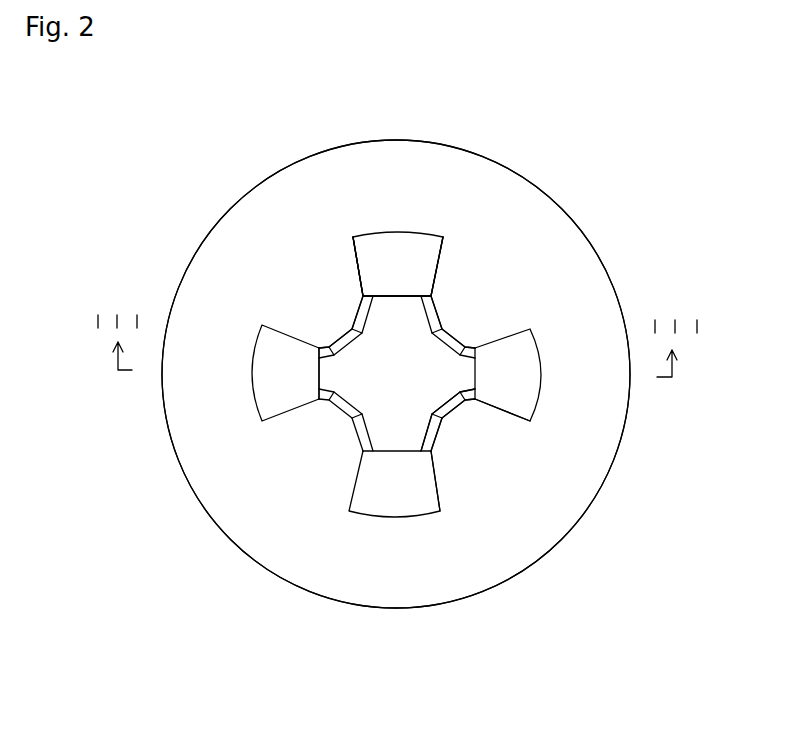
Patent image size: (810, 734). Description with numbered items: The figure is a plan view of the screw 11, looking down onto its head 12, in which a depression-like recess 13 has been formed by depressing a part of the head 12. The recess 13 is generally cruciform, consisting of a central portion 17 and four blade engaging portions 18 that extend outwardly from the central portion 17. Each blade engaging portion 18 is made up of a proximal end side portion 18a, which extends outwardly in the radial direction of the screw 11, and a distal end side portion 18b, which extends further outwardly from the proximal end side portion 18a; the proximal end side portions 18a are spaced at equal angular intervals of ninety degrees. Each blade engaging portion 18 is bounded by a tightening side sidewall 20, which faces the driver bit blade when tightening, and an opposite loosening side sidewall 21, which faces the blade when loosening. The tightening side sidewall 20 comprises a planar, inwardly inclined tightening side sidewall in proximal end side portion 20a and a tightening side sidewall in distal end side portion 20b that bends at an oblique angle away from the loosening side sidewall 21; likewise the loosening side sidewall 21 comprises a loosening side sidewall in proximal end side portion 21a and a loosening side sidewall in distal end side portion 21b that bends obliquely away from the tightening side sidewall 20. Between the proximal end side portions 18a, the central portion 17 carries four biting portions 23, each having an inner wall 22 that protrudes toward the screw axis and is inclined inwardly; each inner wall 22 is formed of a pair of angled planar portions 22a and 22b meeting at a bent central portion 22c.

The screw 11 is at (160, 488).
The head 12 is at (247, 463).
The recess 13 is at (395, 398).
The central portion 17 is at (390, 372).
The blade engaging portion 18 is at (397, 258).
The proximal end side portion 18a is at (399, 300).
The distal end side portion 18b is at (382, 252).
The tightening side sidewall 20 is at (428, 297).
The tightening side sidewall in proximal end side portion 20a is at (443, 328).
The tightening side sidewall in distal end side portion 20b is at (435, 271).
The loosening side sidewall 21 is at (364, 290).
The loosening side sidewall in proximal end side portion 21a is at (358, 328).
The loosening side sidewall in distal end side portion 21b is at (362, 280).
The inner wall 22 is at (448, 410).
The planar portion 22a is at (428, 435).
The planar portion 22b is at (458, 405).
The central portion of inner wall 22c is at (435, 423).
The biting portion 23 is at (340, 335).